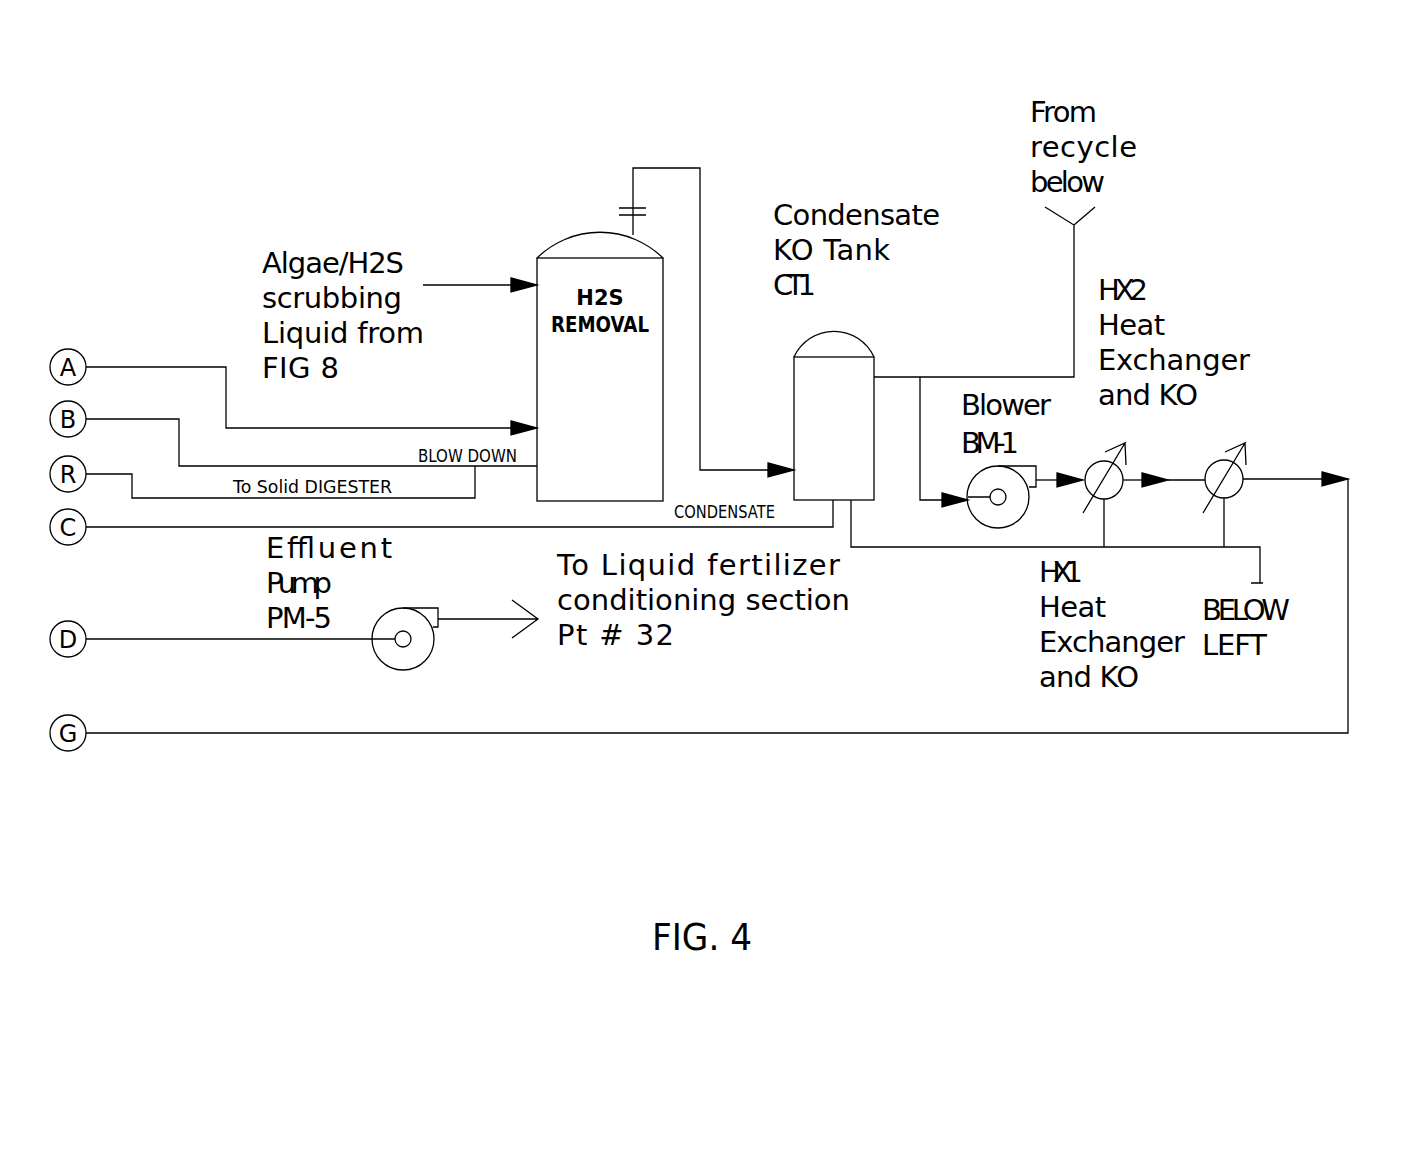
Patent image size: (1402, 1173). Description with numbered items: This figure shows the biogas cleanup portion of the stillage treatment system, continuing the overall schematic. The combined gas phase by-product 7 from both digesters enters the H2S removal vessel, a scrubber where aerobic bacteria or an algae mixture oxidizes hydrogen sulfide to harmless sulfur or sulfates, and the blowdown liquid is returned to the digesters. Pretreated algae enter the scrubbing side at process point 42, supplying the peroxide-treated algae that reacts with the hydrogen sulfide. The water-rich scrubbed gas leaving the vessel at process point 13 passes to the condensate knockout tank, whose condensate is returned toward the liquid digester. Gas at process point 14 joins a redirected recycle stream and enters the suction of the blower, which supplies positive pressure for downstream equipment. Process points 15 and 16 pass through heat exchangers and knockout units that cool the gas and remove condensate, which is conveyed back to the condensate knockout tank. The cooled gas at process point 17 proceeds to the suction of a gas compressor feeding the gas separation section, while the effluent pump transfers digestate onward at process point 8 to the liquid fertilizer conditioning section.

The process point for pretreated algae entry 42 is at (480, 263).
The gas phase by-product 7 is at (311, 401).
The process point rich in water 13 is at (706, 298).
The process point at blower suction 14 is at (984, 357).
The process point at first heat exchanger and knockout unit 15 is at (1026, 478).
The process point at second heat exchanger and knockout unit 16 is at (1145, 487).
The process point at gas compressor suction 17 is at (1275, 485).
The effluent pump PM-5 outlet line 8 is at (312, 622).